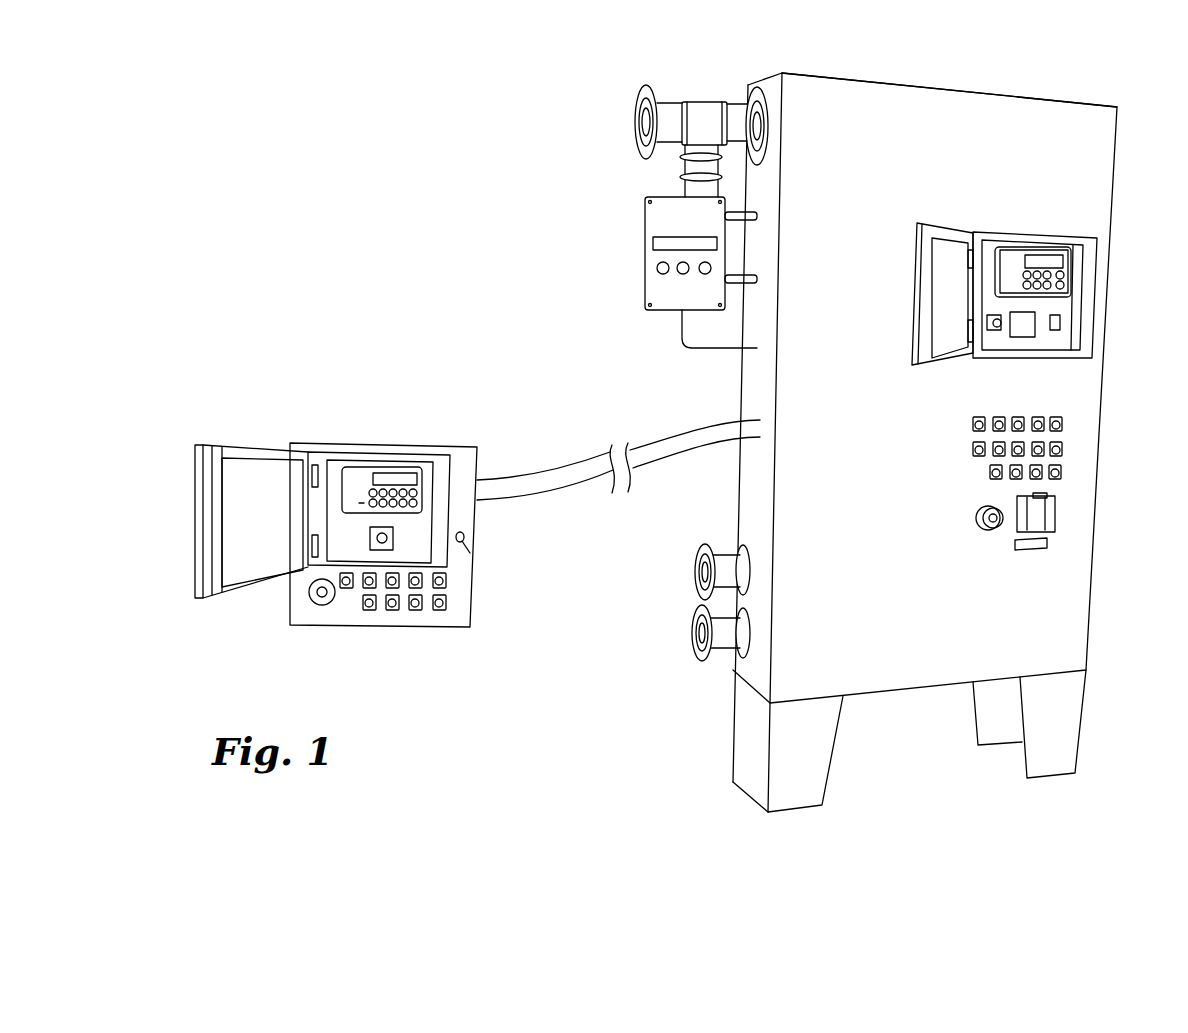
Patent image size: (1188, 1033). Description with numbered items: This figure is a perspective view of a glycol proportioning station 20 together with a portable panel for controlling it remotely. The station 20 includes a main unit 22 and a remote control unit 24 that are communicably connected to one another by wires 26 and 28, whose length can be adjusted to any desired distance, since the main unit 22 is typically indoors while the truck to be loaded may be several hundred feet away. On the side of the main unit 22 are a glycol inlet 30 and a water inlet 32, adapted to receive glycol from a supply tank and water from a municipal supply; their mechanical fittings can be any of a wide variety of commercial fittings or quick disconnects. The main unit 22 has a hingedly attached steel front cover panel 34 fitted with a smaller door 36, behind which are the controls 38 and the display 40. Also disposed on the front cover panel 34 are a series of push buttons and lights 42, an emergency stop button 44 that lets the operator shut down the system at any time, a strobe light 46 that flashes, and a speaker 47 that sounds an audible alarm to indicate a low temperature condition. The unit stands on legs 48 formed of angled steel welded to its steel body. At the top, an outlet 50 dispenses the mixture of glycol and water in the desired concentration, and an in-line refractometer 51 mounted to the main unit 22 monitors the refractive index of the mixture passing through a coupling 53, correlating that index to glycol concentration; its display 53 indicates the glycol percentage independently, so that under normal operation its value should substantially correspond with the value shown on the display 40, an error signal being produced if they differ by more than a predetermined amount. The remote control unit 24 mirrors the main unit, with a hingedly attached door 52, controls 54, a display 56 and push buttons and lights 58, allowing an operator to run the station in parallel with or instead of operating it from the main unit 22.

The glycol proportioning station 20 is at (486, 272).
The main unit 22 is at (833, 73).
The remote control unit 24 is at (333, 442).
The wire 26 is at (532, 477).
The wire 28 is at (517, 502).
The glycol inlet 30 is at (700, 575).
The water inlet 32 is at (697, 633).
The front cover panel 34 is at (1042, 135).
The door 36 is at (947, 230).
The controls 38 is at (1062, 303).
The display 40 is at (1047, 258).
The push buttons and lights 42 is at (1074, 445).
The emergency stop button 44 is at (983, 530).
The strobe light 46 is at (1058, 513).
The speaker 47 is at (1015, 537).
The legs 48 is at (782, 748).
The outlet 50 is at (637, 108).
The in-line refractometer 51 is at (645, 222).
The coupling 53 is at (705, 118).
The door 52 is at (223, 445).
The controls 54 is at (422, 516).
The display 56 is at (393, 478).
The push buttons and lights 58 is at (417, 617).